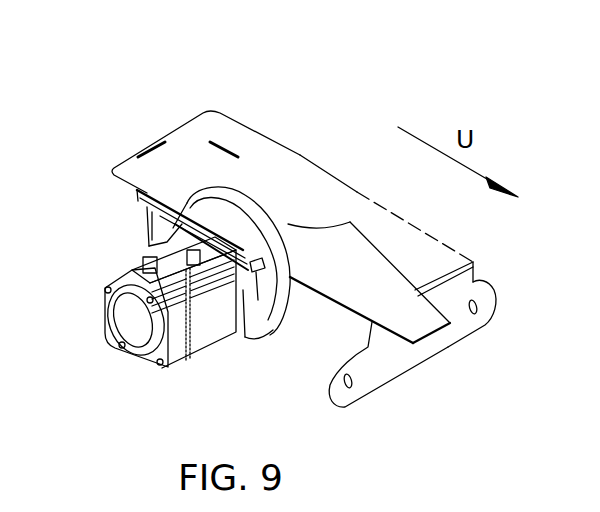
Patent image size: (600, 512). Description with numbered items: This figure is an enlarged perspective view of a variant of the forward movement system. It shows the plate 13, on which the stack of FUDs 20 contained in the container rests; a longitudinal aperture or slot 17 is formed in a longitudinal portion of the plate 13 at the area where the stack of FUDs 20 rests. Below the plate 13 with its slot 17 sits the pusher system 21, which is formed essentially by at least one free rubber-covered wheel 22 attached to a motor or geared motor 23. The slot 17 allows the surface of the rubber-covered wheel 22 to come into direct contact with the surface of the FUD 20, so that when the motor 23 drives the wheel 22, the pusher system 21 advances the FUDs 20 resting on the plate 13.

The plate 13 is at (190, 135).
The longitudinal aperture 17 is at (175, 214).
The FUDs 20 is at (413, 312).
The pusher system 21 is at (95, 366).
The rubber-covered wheel 22 is at (218, 203).
The motor 23 is at (207, 323).